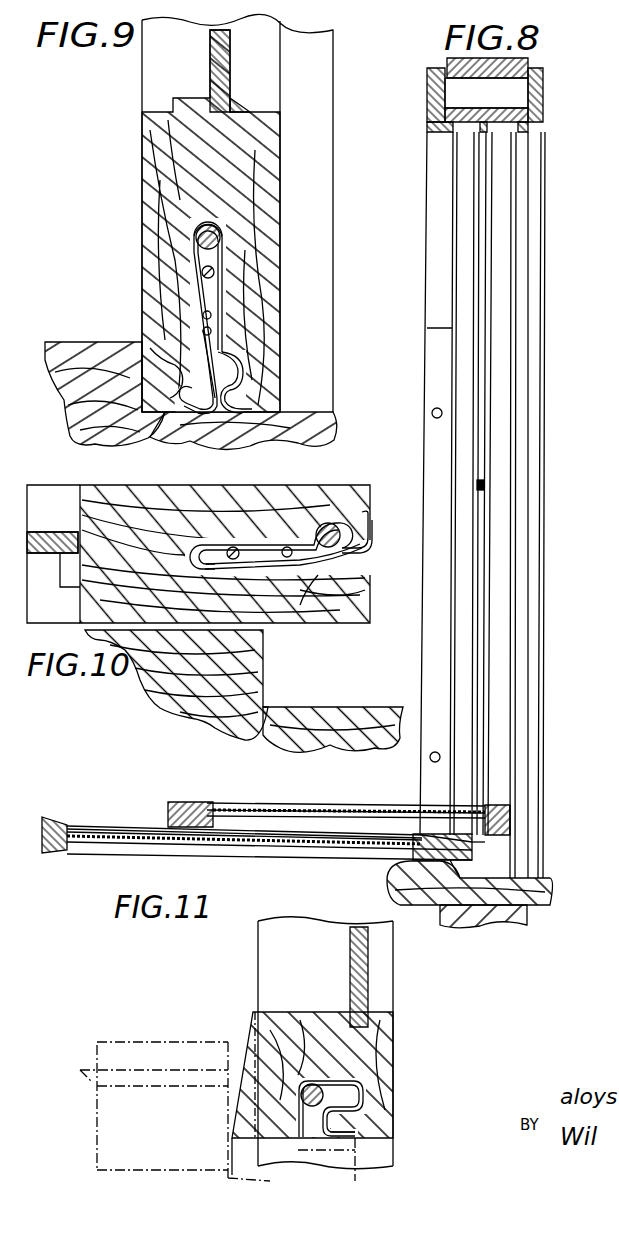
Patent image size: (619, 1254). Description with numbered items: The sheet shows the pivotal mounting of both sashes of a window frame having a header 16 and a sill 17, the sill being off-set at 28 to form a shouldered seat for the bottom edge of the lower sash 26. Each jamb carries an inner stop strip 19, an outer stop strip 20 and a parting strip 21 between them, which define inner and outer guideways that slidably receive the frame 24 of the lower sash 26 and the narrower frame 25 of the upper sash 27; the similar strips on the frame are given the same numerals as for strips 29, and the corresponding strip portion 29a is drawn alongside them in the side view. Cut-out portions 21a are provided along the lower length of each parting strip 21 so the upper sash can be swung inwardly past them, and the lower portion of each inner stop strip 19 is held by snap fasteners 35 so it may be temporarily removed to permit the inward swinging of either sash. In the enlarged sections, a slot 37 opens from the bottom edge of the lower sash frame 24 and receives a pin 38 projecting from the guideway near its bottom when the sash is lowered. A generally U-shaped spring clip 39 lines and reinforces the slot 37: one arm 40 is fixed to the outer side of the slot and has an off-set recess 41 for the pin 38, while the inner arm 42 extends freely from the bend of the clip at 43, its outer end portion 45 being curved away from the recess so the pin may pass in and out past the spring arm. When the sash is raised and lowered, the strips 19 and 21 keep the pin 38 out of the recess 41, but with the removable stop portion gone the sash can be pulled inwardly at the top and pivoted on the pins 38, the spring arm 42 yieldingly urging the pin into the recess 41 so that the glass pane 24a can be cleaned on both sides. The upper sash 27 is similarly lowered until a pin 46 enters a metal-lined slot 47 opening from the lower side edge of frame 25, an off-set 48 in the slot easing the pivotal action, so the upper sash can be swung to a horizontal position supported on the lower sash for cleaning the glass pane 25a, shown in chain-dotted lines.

In FIG. 8, the header 16 is at (430, 88).
In FIG. 9, the sill 17 is at (66, 343).
In FIG. 10, the sill 17 is at (188, 706).
In FIG. 8, the sill 17 is at (390, 893).
In FIG. 8, the inner stop strip 19 is at (440, 150).
In FIG. 8, the outer stop strip 20 is at (548, 128).
In FIG. 8, the parting strip 21 is at (484, 165).
In FIG. 8, the cut-out portion 21a is at (480, 535).
In FIG. 9, the frame of lower sash 24 is at (282, 140).
In FIG. 10, the frame of lower sash 24 is at (64, 622).
In FIG. 8, the frame of lower sash 24 is at (178, 856).
In FIG. 8, the glass pane of lower sash 24a is at (125, 831).
In FIG. 8, the frame of upper sash 25 is at (203, 803).
In FIG. 11, the frame of upper sash 25 is at (395, 1020).
In FIG. 8, the glass pane of upper sash 25a is at (345, 808).
In FIG. 11, the glass pane of upper sash 25a is at (97, 1067).
In FIG. 8, the lower sash 26 is at (82, 824).
In FIG. 8, the upper sash 27 is at (262, 803).
In FIG. 11, the upper sash 27 is at (378, 967).
In FIG. 9, the off-set of sill 28 is at (282, 430).
In FIG. 10, the off-set of sill 28 is at (326, 707).
In FIG. 8, the off-set of sill 28 is at (440, 910).
In FIG. 8, the strips 29 is at (456, 685).
In FIG. 8, the glass pane 29a is at (504, 739).
In FIG. 8, the snap fastener 35 is at (432, 413).
In FIG. 9, the slot 37 is at (185, 362).
In FIG. 10, the slot 37 is at (318, 583).
In FIG. 8, the slot 37 is at (395, 878).
In FIG. 9, the pin 38 is at (220, 238).
In FIG. 10, the pin 38 is at (337, 526).
In FIG. 8, the pin 38 is at (474, 842).
In FIG. 9, the spring clip 39 is at (226, 290).
In FIG. 9, the arm of clip 40 is at (215, 318).
In FIG. 10, the arm of clip 40 is at (233, 547).
In FIG. 9, the off-set recess 41 is at (238, 376).
In FIG. 10, the off-set recess 41 is at (322, 527).
In FIG. 9, the inner arm of clip 42 is at (212, 348).
In FIG. 10, the inner arm of clip 42 is at (252, 560).
In FIG. 9, the bend of clip 43 is at (215, 226).
In FIG. 10, the bend of clip 43 is at (183, 548).
In FIG. 9, the outer end portion of arm 45 is at (185, 412).
In FIG. 10, the outer end portion of arm 45 is at (368, 556).
In FIG. 8, the pin 46 is at (513, 800).
In FIG. 11, the pin 46 is at (322, 1090).
In FIG. 8, the slot 47 is at (540, 798).
In FIG. 11, the slot 47 is at (352, 1132).
In FIG. 11, the off-set 48 is at (362, 1098).